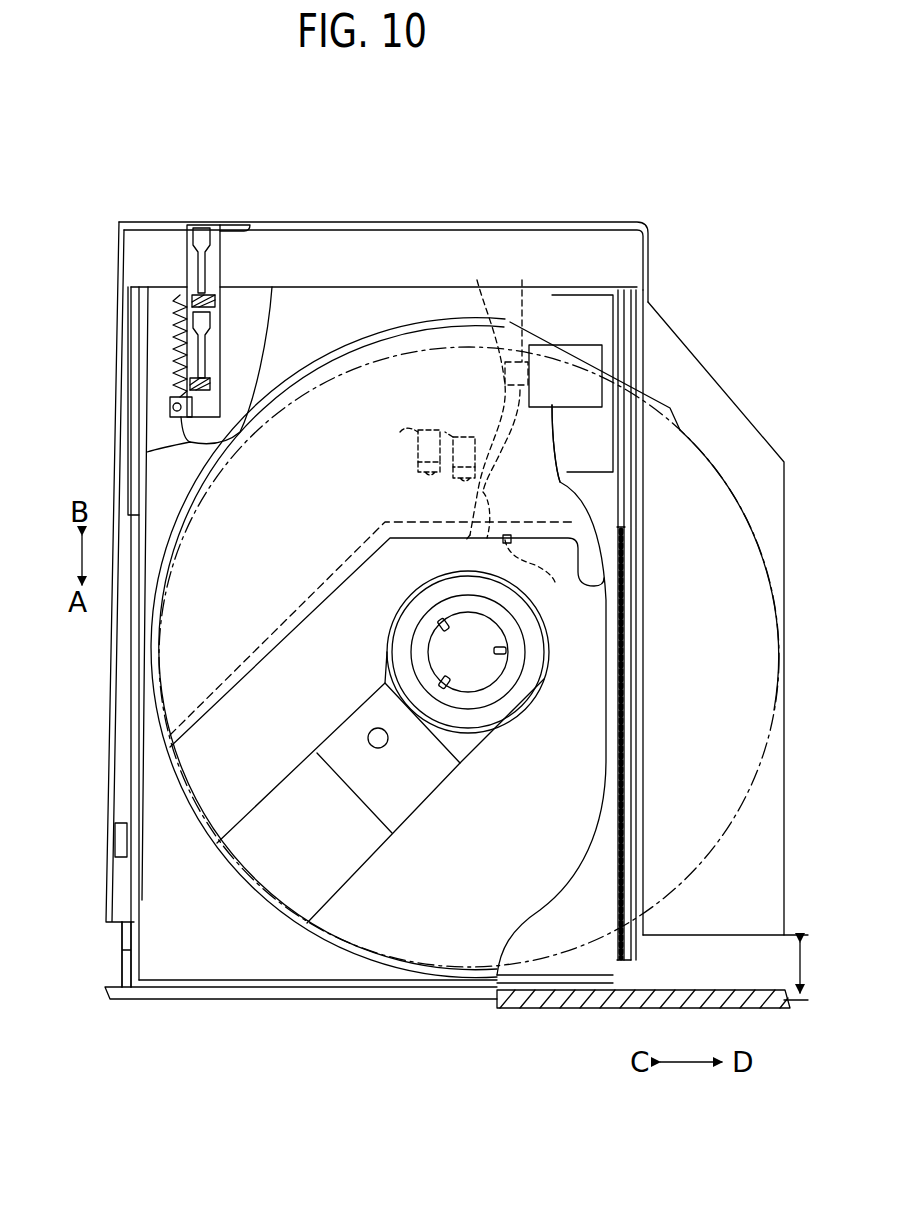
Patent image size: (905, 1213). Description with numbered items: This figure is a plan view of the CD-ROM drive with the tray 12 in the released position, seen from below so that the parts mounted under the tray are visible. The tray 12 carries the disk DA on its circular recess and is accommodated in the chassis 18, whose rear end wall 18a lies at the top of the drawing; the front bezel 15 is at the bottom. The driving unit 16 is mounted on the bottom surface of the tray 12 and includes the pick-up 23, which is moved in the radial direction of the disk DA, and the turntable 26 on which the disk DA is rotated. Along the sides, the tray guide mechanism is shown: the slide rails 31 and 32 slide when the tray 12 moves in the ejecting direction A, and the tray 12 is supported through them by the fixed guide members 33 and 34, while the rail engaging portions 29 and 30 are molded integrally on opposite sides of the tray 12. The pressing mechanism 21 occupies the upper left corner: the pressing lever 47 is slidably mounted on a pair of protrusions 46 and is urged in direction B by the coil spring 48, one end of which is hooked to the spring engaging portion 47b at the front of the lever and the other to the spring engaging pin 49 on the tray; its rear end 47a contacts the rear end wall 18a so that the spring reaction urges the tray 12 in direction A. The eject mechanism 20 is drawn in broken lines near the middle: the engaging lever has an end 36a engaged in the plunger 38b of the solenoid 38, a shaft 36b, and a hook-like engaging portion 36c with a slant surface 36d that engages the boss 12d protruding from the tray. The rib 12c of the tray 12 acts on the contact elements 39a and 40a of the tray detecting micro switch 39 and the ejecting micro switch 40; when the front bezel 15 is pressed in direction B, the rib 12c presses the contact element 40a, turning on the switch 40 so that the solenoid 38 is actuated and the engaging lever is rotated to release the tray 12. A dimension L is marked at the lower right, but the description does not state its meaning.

The tray 12 is at (178, 712).
The rib 12c is at (410, 532).
The boss 12d is at (387, 642).
The front bezel 15 is at (300, 1000).
The driving unit 16 is at (335, 800).
The chassis 18 is at (111, 808).
The rear end wall of the chassis 18a is at (416, 242).
The eject mechanism 20 is at (470, 372).
The pressing mechanism 21 is at (157, 270).
The pick-up 23 is at (342, 745).
The turntable 26 is at (412, 646).
The rail engaging portion 29 is at (120, 962).
The rail engaging portion 30 is at (635, 972).
The slide rail 31 is at (130, 405).
The slide rail 32 is at (637, 505).
The fixed guide member 33 is at (120, 655).
The fixed guide member 34 is at (637, 662).
The end of the engaging lever 36a is at (521, 280).
The shaft 36b is at (512, 445).
The hook-like engaging portion 36c is at (490, 498).
The slant surface 36d is at (453, 546).
The solenoid actuator 38 is at (590, 387).
The plunger 38b is at (500, 340).
The tray detecting micro switch 39 is at (462, 437).
The contact element 39a is at (458, 480).
The ejecting micro switch 40 is at (408, 434).
The contact element 40a is at (418, 468).
The protrusions 46 is at (215, 300).
The pressing lever 47 is at (220, 290).
The rear end of the pressing lever 47a is at (240, 232).
The spring engaging portion 47b is at (200, 442).
The coil spring 48 is at (173, 338).
The spring engaging pin 49 is at (182, 295).
The disk DA is at (736, 830).
The offset distance L is at (789, 967).